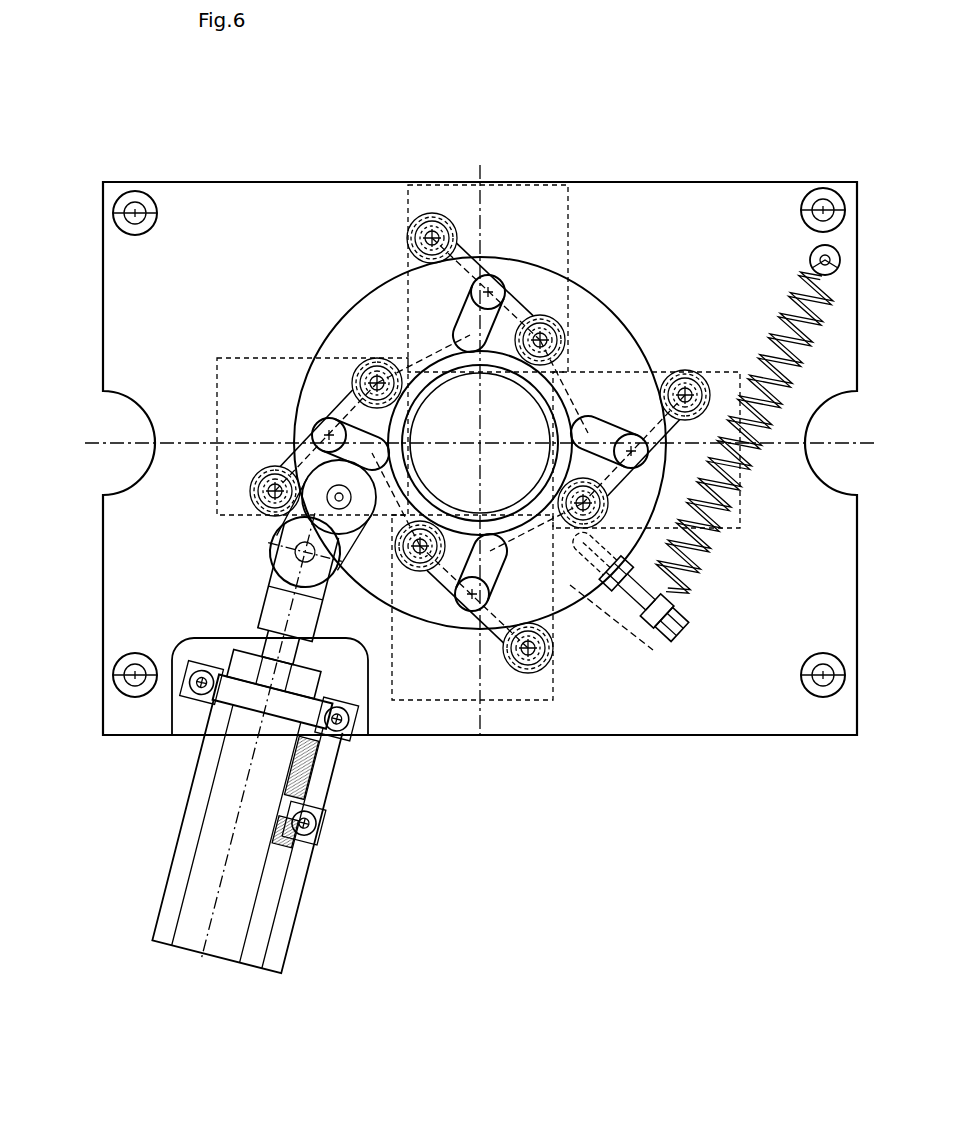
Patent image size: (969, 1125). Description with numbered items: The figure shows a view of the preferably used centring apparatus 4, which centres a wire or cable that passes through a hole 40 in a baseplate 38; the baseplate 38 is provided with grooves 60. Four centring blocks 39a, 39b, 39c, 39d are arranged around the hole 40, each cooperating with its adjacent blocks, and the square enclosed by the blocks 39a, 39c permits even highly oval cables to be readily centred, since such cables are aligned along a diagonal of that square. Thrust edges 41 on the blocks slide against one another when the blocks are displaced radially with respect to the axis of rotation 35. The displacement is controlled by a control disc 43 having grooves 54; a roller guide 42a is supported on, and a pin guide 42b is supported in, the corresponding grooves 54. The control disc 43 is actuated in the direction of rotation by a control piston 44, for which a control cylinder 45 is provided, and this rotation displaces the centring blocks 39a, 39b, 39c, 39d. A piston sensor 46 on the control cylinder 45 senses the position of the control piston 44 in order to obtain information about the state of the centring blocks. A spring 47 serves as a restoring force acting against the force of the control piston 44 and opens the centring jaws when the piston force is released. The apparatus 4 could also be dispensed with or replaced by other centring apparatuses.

The centring apparatus 4 is at (590, 180).
The axis of rotation 35 is at (480, 443).
The baseplate 38 is at (188, 308).
The centring block 39a is at (432, 693).
The centring block 39b is at (224, 392).
The centring block 39c is at (447, 196).
The centring block 39d is at (728, 378).
The hole 40 is at (480, 443).
The thrust edges 41 is at (327, 335).
The roller guide 42a is at (428, 234).
The pin guide 42b is at (492, 280).
The control disc 43 is at (400, 360).
The control piston 44 is at (262, 607).
The control cylinder 45 is at (233, 918).
The piston sensor 46 is at (317, 782).
The spring 47 is at (703, 578).
The grooves 54 is at (601, 424).
The grooves 60 is at (432, 345).